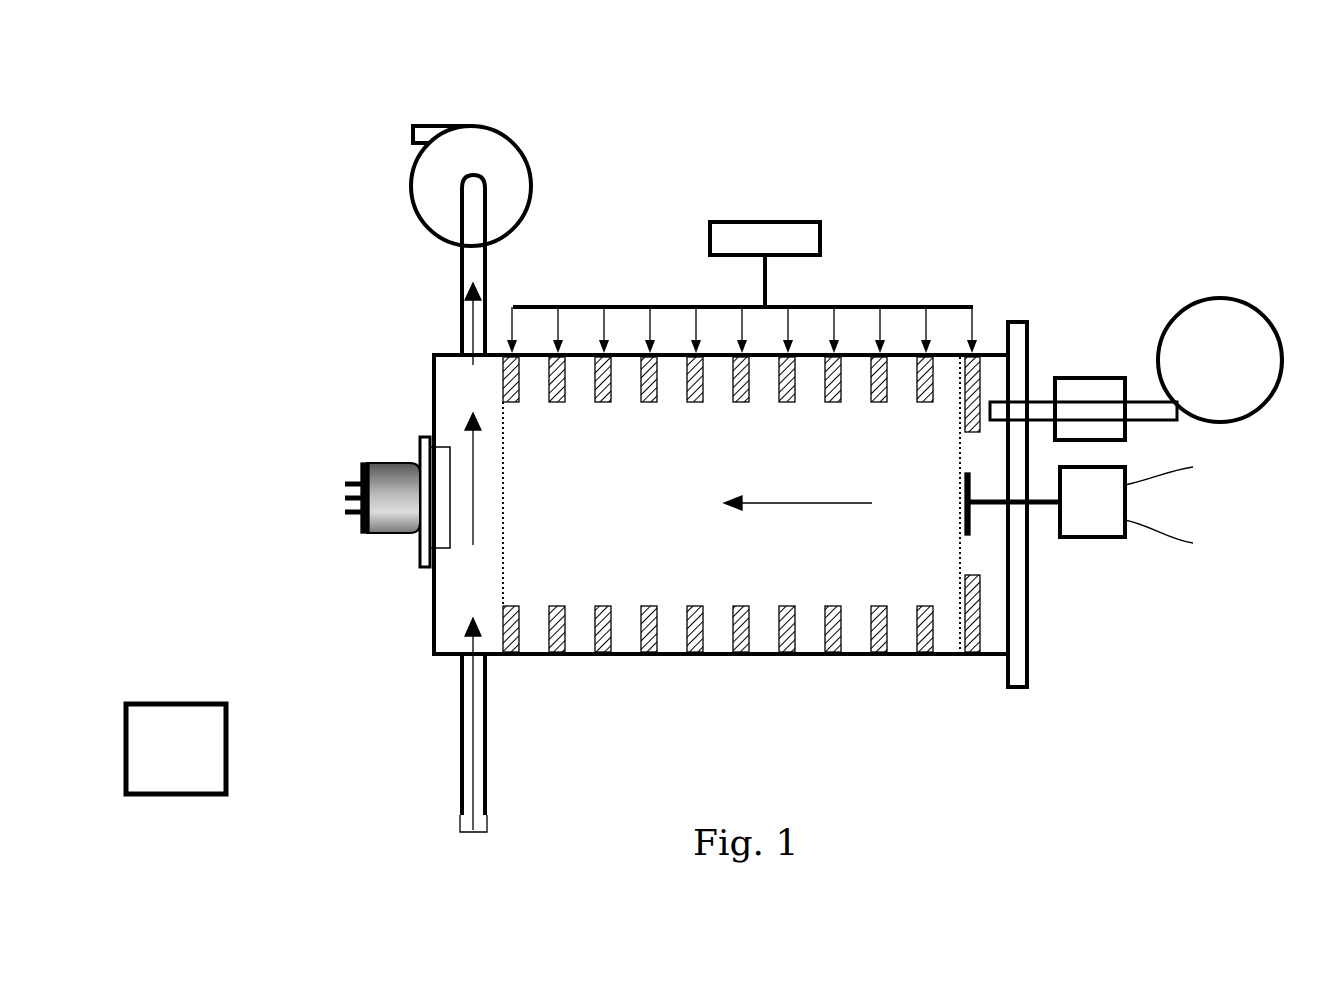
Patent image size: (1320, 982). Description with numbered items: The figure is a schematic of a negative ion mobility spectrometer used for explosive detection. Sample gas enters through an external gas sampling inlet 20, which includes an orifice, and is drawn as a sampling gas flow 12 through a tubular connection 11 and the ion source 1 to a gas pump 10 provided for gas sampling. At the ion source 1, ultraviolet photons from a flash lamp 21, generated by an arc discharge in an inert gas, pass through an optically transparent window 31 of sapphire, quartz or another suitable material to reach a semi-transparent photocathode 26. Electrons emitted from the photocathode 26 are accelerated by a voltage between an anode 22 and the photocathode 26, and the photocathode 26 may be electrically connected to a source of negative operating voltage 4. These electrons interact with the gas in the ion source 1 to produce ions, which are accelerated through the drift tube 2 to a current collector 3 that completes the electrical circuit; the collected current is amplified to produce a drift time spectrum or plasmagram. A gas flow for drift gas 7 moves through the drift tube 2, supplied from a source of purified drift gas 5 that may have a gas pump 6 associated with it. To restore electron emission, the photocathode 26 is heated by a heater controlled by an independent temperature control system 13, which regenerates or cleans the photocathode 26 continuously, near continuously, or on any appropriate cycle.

The ion source 1 is at (455, 450).
The drift tube 2 is at (810, 570).
The current collector 3 is at (995, 505).
The source of negative operating voltage 4 is at (772, 220).
The source of purified drift gas 5 is at (1075, 378).
The gas pump 6 is at (1200, 340).
The gas flow for drift gas 7 is at (800, 508).
The gas pump 10 is at (500, 172).
The tubular connection 11 is at (458, 693).
The sampling gas flow 12 is at (475, 505).
The independent temperature control system 13 is at (427, 568).
The external gas sampling inlet 20 is at (455, 816).
The flash lamp 21 is at (390, 533).
The anode 22 is at (505, 492).
The semi-transparent photocathode 26 is at (437, 498).
The optically transparent window 31 is at (420, 442).